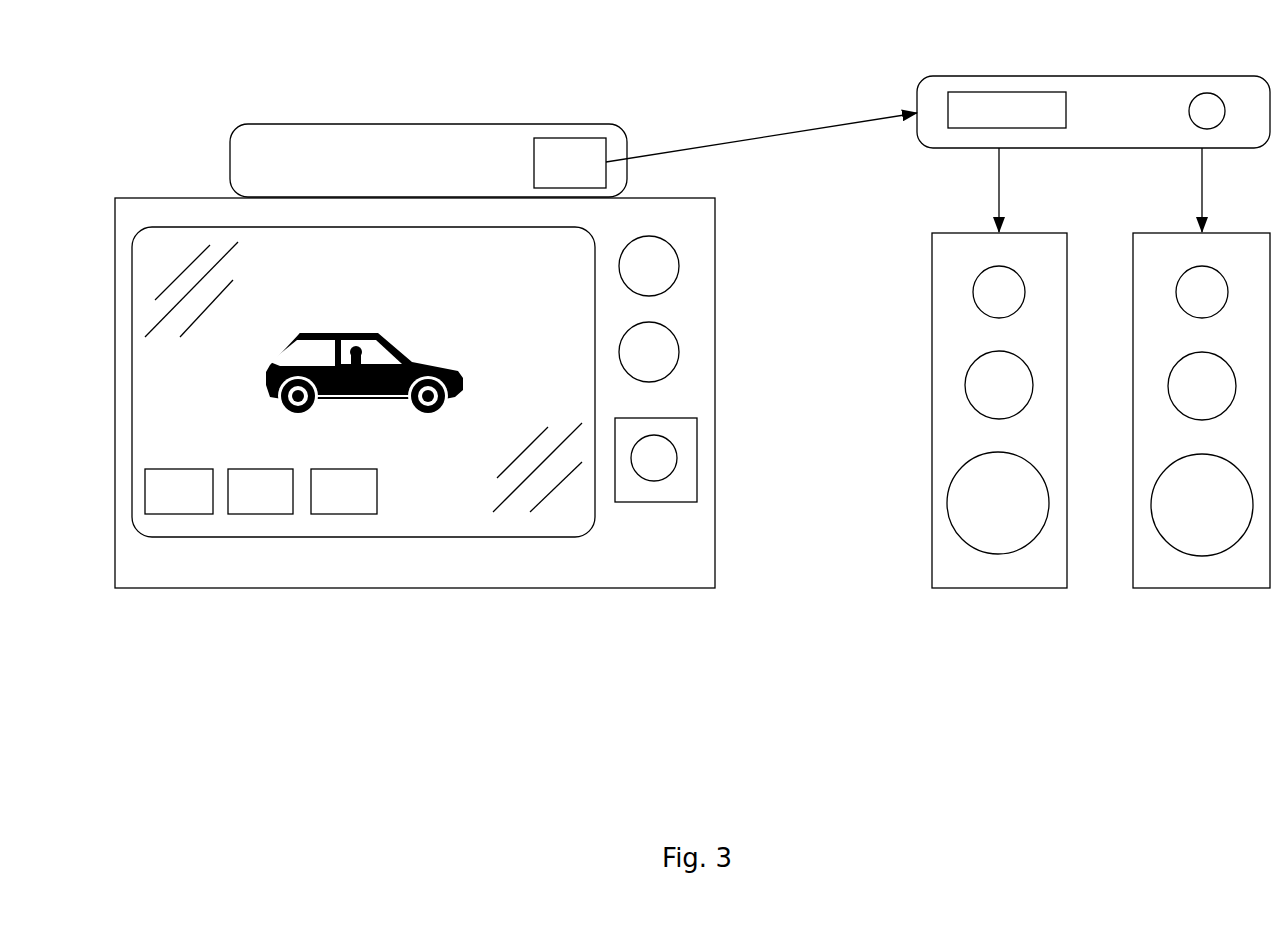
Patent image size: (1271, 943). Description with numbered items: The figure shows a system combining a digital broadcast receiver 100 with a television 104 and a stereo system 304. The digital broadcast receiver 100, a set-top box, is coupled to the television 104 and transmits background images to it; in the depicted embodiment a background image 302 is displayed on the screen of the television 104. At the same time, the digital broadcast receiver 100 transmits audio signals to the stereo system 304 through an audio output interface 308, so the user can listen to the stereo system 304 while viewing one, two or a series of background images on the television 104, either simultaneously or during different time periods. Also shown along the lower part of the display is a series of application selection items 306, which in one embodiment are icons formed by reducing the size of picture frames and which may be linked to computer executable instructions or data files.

The digital broadcast receiver 100 is at (414, 170).
The television 104 is at (618, 605).
The background image 302 is at (448, 435).
The stereo system 304 is at (880, 492).
The application selection items 306 is at (325, 508).
The audio output interface 308 is at (592, 155).